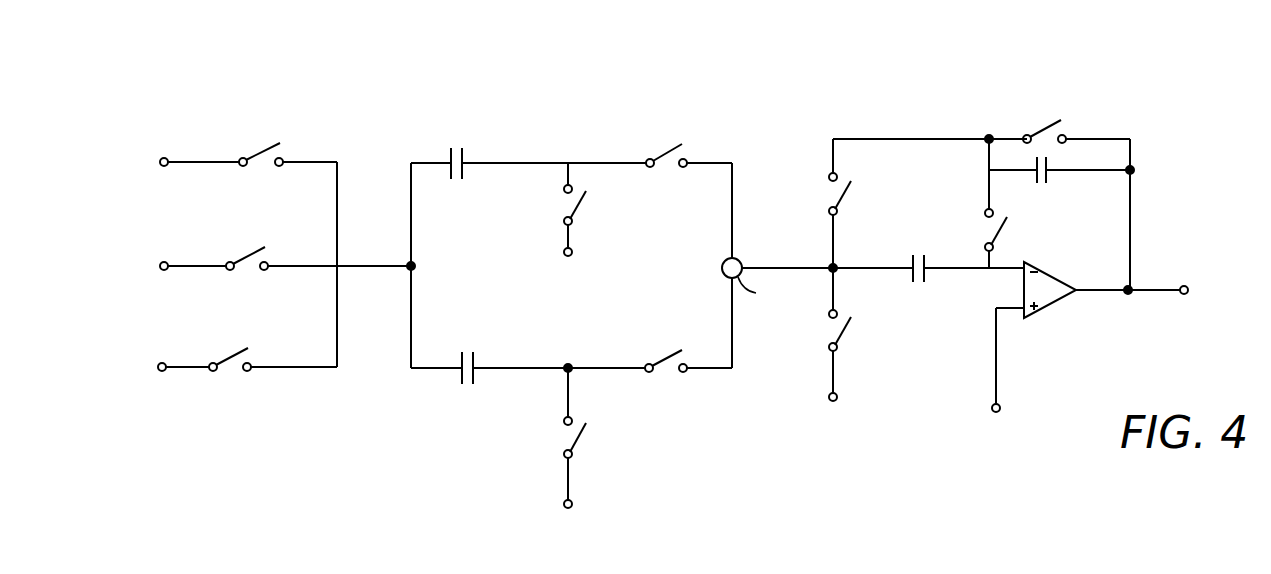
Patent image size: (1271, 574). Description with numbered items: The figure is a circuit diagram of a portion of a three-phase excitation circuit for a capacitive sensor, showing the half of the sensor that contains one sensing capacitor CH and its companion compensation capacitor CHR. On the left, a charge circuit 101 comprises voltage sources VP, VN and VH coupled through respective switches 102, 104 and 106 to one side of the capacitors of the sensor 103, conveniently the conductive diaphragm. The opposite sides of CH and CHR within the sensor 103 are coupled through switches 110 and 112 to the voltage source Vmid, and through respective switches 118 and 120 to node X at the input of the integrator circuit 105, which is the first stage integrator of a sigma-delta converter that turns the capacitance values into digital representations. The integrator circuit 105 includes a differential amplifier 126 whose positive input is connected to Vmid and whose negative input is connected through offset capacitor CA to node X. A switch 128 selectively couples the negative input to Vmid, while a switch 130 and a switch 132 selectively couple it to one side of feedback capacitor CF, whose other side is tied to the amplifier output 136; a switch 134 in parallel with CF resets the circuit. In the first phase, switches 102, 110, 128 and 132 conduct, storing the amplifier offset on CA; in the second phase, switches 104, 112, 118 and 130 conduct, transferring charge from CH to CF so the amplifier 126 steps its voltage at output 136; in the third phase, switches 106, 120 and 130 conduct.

The charge circuit 101 is at (292, 126).
The switch 102 is at (254, 155).
The switch 104 is at (243, 357).
The switch 106 is at (247, 257).
The sensor 103 is at (491, 106).
The switch 110 is at (576, 205).
The switch 112 is at (576, 438).
The switch 118 is at (670, 168).
The switch 120 is at (669, 373).
The integrator circuit 105 is at (942, 93).
The differential amplifier 126 is at (1040, 262).
The switch 128 is at (843, 331).
The switch 130 is at (843, 196).
The switch 132 is at (1000, 232).
The switch 134 is at (1040, 134).
The output 136 is at (1148, 294).